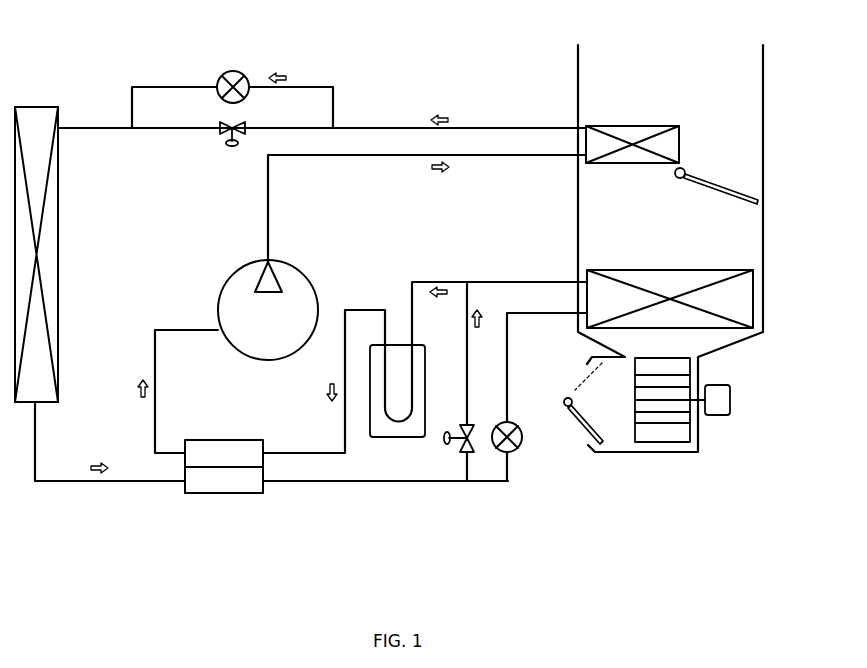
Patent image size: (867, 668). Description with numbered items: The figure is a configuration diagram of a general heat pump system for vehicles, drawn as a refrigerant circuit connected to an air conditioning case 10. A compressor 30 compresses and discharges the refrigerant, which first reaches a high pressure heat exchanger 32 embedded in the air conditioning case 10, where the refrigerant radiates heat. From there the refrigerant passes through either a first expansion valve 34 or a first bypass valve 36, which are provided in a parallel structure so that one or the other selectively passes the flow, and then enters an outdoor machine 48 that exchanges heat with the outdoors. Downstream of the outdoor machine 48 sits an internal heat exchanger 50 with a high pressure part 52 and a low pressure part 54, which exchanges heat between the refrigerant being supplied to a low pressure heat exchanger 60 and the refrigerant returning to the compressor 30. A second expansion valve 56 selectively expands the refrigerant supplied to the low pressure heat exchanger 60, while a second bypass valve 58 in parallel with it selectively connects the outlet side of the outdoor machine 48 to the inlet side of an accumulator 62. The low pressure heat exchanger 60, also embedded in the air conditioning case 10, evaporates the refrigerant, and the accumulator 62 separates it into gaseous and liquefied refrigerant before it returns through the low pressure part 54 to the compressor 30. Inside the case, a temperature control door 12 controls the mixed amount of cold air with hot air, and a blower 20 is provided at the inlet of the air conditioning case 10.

The air conditioning case 10 is at (763, 73).
The temperature control door 12 is at (730, 185).
The blower 20 is at (683, 385).
The compressor 30 is at (240, 268).
The high pressure heat exchanger 32 is at (630, 125).
The first expansion valve 34 is at (231, 70).
The first bypass valve 36 is at (232, 150).
The outdoor machine 48 is at (37, 107).
The internal heat exchanger 50 is at (229, 480).
The high pressure part 52 is at (217, 487).
The low pressure part 54 is at (217, 449).
The second expansion valve 56 is at (521, 450).
The second bypass valve 58 is at (447, 442).
The low pressure heat exchanger 60 is at (737, 298).
The accumulator 62 is at (410, 362).